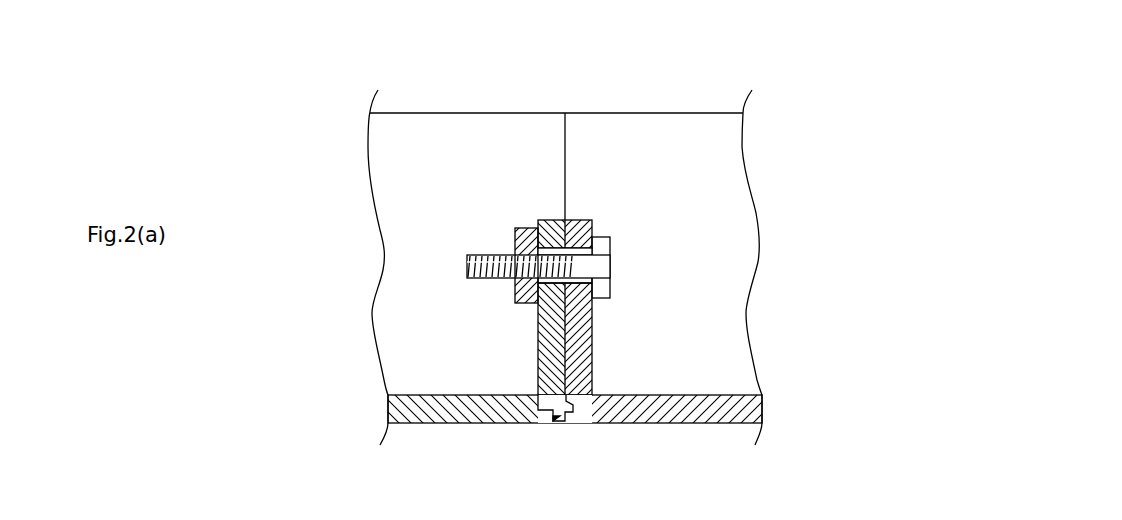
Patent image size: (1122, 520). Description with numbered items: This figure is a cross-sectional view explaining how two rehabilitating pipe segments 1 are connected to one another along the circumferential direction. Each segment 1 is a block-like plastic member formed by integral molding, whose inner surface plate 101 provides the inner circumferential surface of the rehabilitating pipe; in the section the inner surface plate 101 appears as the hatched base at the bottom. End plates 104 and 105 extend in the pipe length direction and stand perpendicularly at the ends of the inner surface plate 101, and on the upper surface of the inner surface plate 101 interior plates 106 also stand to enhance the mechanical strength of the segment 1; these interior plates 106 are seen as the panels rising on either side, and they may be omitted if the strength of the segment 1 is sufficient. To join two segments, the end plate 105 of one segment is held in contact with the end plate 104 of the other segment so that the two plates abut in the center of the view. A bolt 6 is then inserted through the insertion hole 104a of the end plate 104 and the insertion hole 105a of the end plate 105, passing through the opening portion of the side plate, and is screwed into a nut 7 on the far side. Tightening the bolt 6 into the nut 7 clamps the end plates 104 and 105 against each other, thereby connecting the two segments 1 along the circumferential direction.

The rehabilitating pipe segment 1 is at (485, 93).
The bolt 6 is at (610, 250).
The nut 7 is at (515, 233).
The inner surface plate 101 is at (418, 423).
The end plate 104 is at (590, 220).
The insertion hole 104a is at (592, 285).
The end plate 105 is at (540, 220).
The insertion hole 105a is at (515, 283).
The interior plate 106 is at (430, 113).